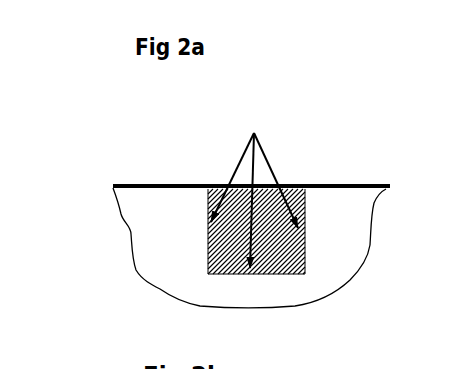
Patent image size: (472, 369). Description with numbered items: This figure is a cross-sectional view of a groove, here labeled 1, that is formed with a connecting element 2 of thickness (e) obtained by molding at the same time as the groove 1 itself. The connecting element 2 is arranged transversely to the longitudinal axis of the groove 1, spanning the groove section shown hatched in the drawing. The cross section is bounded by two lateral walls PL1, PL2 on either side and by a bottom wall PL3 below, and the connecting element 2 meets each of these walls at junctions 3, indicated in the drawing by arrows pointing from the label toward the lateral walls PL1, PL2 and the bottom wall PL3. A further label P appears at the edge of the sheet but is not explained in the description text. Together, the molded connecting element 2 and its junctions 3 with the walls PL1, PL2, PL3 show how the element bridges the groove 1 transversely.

The substrate body 1 is at (165, 185).
The connecting element 2 is at (303, 188).
The junctions 3 is at (254, 186).
The lateral wall PL1 is at (208, 236).
The lateral wall PL2 is at (304, 250).
The bottom wall PL3 is at (278, 274).
The element P is at (465, 123).